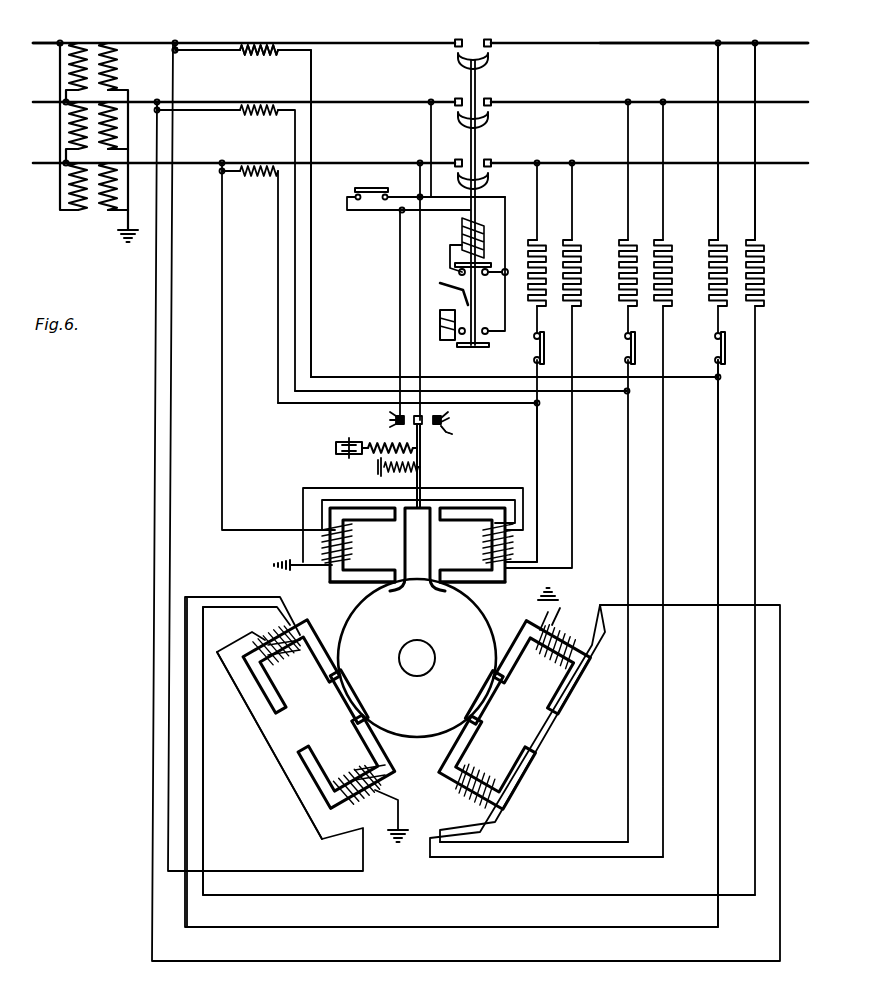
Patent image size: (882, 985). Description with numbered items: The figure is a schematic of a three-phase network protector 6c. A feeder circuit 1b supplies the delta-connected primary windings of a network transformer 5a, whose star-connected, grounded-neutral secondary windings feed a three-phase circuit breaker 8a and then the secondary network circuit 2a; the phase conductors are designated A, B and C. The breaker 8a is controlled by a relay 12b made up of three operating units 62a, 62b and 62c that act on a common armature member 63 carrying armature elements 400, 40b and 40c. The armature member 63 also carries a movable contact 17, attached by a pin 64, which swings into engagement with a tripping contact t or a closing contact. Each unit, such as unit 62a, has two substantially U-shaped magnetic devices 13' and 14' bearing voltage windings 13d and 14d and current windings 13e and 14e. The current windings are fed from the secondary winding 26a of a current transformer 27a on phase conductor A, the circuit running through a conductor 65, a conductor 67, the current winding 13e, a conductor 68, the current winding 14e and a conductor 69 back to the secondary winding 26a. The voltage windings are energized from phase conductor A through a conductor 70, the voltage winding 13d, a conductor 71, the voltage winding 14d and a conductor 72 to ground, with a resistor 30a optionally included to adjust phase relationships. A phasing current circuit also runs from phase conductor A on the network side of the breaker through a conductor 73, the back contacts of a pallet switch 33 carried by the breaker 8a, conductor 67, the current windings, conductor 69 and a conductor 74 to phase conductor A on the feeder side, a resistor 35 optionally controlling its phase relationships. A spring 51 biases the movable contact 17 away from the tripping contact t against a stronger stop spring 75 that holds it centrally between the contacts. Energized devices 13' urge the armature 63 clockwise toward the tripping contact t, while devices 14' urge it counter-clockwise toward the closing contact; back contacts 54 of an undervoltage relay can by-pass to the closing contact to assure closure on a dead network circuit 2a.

The feeder circuit 1b is at (40, 43).
The network transformer 5a is at (108, 30).
The current transformer 27a is at (212, 30).
The secondary winding 26a is at (258, 43).
The conductor 74 is at (172, 50).
The conductor 65 is at (312, 80).
The secondary network circuit 2a is at (688, 43).
The phase conductor A is at (783, 50).
The phase conductor B is at (783, 108).
The phase conductor C is at (783, 170).
The three-phase circuit breaker 8a is at (480, 140).
The back contacts 54 is at (355, 186).
The conductor 73 is at (720, 210).
The conductor 70 is at (758, 210).
The resistor 35 is at (712, 242).
The resistor 30a is at (765, 280).
The pallet switch 33 is at (735, 350).
The network protector 6c is at (358, 308).
The conductor 67 is at (718, 505).
The conductor 69 is at (175, 353).
The movable contact 17 is at (424, 410).
The tripping contact t is at (450, 436).
The spring 51 is at (358, 430).
The stop spring 75 is at (376, 460).
The pin 64 is at (422, 462).
The relay 12b is at (510, 474).
The operating unit 62c is at (270, 492).
The armature element 40c is at (402, 552).
The magnetic device 14' is at (362, 568).
The magnetic device 13' is at (413, 662).
The armature member 63 is at (360, 610).
The armature element 400 is at (322, 692).
The voltage winding 13d is at (285, 655).
The current winding 13e is at (285, 670).
The voltage winding 14d is at (436, 713).
The current winding 14e is at (570, 605).
The conductor 71 is at (262, 713).
The conductor 68 is at (275, 752).
The operating unit 62a is at (255, 806).
The conductor 72 is at (400, 800).
The armature element 40b is at (515, 742).
The operating unit 62b is at (582, 806).